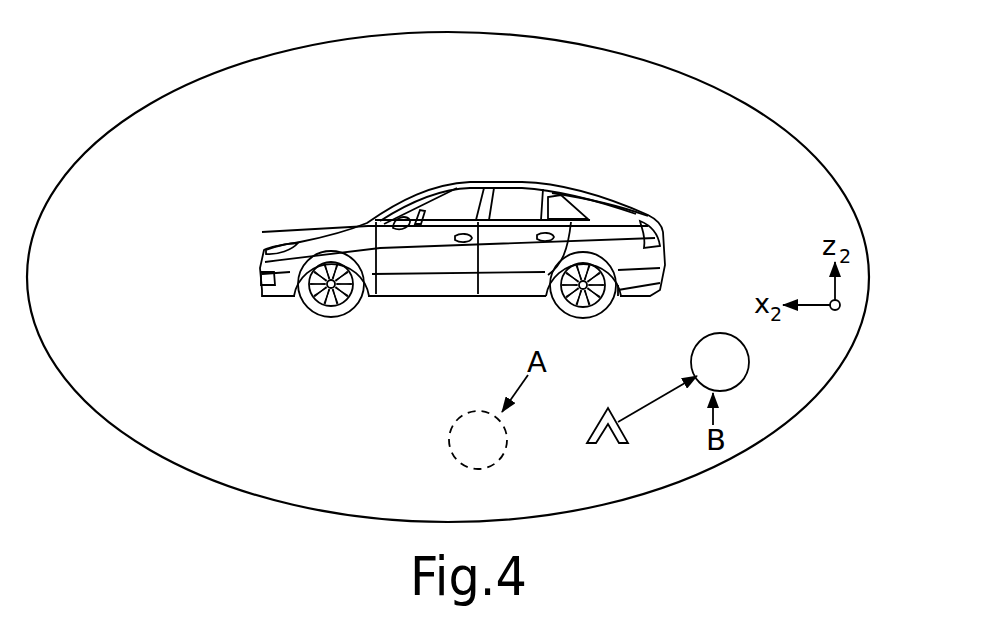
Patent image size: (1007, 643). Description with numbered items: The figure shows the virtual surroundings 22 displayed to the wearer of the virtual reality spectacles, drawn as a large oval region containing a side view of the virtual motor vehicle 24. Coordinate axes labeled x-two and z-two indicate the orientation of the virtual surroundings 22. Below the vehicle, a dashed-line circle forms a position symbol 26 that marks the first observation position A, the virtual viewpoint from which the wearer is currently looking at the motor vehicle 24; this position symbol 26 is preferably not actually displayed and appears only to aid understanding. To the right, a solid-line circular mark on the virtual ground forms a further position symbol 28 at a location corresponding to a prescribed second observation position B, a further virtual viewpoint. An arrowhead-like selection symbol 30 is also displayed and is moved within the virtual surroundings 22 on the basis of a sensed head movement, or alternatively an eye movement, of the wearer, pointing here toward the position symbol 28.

The virtual surroundings 22 is at (645, 60).
The virtual motor vehicle 24 is at (646, 177).
The position symbol 26 is at (495, 455).
The position symbol 28 is at (737, 376).
The selection symbol 30 is at (637, 433).